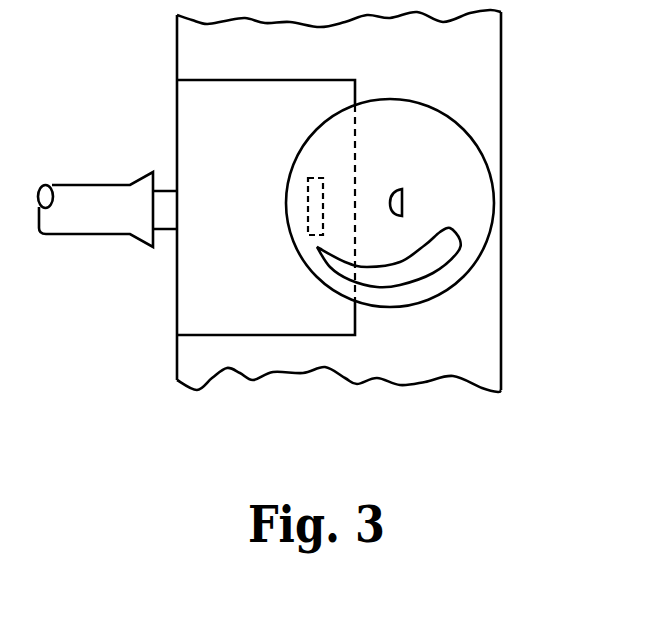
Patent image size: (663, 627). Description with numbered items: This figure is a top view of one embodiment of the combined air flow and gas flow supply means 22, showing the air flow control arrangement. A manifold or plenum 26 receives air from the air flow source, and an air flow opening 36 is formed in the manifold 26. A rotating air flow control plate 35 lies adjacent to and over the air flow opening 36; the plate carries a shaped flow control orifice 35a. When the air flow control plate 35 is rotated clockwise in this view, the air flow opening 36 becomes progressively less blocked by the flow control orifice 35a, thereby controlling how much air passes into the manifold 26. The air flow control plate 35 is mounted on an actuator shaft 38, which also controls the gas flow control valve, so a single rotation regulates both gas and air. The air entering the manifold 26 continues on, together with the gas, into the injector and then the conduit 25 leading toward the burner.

The combined air flow and gas flow supply means 22 is at (502, 82).
The conduit 25 is at (55, 185).
The manifold or plenum 26 is at (192, 280).
The air flow control plate 35 is at (436, 108).
The flow control orifice 35a is at (453, 229).
The air flow opening 36 is at (310, 193).
The actuator shaft 38 is at (395, 188).